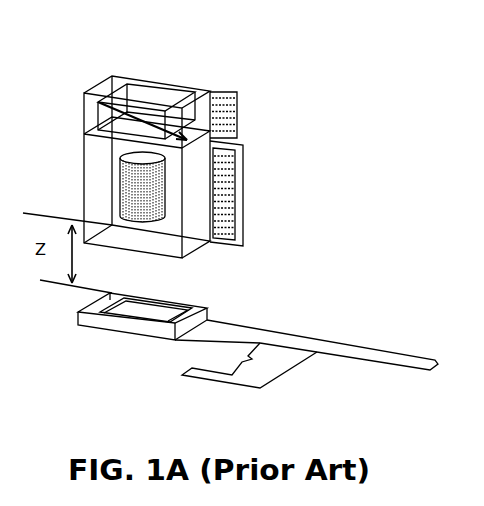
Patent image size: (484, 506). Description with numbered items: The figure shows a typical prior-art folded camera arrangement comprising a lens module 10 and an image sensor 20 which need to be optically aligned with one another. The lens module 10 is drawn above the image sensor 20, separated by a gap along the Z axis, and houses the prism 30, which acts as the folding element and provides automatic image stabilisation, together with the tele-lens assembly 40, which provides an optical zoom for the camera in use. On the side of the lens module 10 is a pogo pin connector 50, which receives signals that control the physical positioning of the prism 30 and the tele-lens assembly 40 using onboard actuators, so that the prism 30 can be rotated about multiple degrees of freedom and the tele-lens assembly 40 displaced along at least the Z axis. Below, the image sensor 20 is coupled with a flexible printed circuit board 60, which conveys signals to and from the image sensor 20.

The lens module 10 is at (334, 131).
The image sensor 20 is at (173, 312).
The prism 30 is at (133, 100).
The tele-lens assembly 40 is at (115, 163).
The pogo pin connector 50 is at (223, 92).
The flexible printed circuit board 60 is at (280, 377).